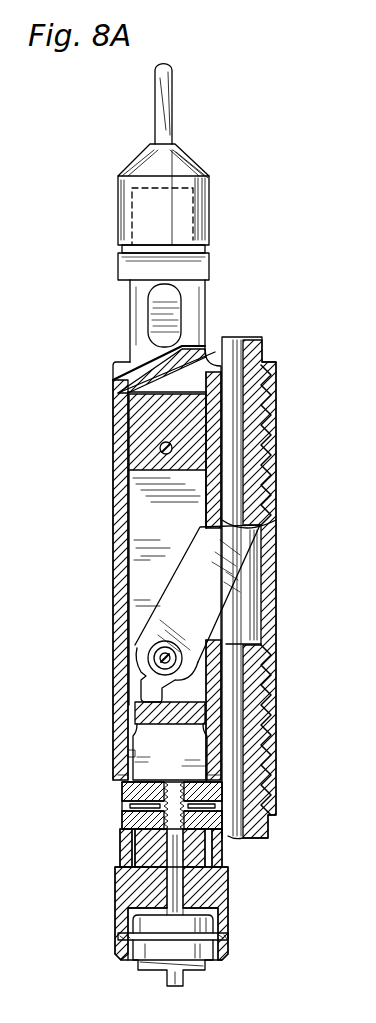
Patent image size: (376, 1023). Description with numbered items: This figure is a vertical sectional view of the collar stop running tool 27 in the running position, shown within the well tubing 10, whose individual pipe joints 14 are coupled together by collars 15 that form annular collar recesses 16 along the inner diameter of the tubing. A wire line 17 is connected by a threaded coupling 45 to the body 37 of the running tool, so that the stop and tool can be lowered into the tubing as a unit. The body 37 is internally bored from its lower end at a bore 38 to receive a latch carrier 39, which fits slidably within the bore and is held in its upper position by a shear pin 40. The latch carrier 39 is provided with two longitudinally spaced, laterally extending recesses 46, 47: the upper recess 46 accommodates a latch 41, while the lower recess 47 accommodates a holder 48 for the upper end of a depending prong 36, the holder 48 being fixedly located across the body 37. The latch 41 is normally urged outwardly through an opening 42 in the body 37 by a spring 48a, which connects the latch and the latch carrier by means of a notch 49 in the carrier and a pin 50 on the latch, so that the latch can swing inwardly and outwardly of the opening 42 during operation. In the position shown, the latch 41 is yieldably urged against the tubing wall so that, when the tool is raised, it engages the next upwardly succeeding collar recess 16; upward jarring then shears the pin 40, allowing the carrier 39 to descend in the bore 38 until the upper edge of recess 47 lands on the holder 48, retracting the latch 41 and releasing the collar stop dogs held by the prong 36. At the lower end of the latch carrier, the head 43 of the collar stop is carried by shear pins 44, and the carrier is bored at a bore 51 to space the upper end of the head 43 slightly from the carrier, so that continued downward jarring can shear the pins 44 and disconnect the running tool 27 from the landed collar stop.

The wire line 17 is at (175, 93).
The threaded coupling 45 is at (198, 162).
The pipe joint 14 is at (262, 345).
The opening 42 is at (258, 490).
The latch 41 is at (236, 561).
The collar recess 16 is at (262, 581).
The collar 15 is at (277, 608).
The well tubing 10 is at (264, 683).
The body 37 is at (118, 400).
The latch carrier 39 is at (128, 424).
The shear pin 40 is at (159, 448).
The bore 38 is at (124, 506).
The running tool 27 is at (104, 558).
The recess 46 is at (152, 580).
The pin 50 is at (172, 650).
The spring 48a is at (140, 688).
The notch 49 is at (167, 741).
The recess 47 is at (148, 775).
The holder 48 is at (130, 795).
The prong 36 is at (118, 882).
The bore 51 is at (128, 905).
The shear pins 44 is at (118, 940).
The head 43 is at (125, 950).